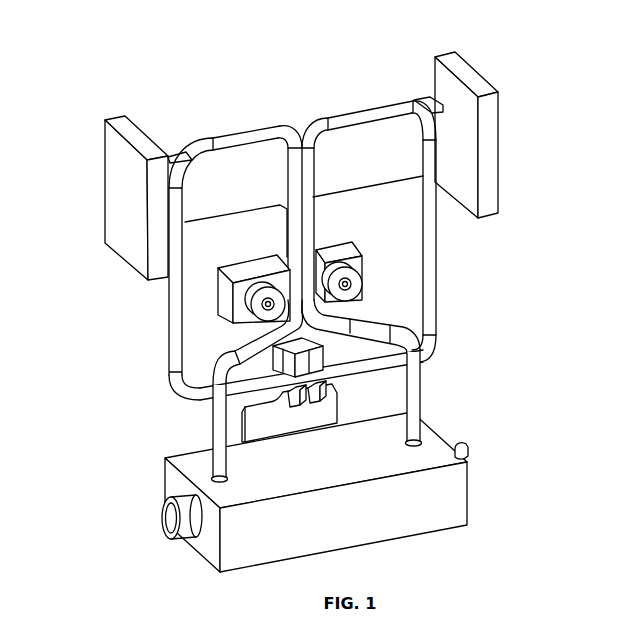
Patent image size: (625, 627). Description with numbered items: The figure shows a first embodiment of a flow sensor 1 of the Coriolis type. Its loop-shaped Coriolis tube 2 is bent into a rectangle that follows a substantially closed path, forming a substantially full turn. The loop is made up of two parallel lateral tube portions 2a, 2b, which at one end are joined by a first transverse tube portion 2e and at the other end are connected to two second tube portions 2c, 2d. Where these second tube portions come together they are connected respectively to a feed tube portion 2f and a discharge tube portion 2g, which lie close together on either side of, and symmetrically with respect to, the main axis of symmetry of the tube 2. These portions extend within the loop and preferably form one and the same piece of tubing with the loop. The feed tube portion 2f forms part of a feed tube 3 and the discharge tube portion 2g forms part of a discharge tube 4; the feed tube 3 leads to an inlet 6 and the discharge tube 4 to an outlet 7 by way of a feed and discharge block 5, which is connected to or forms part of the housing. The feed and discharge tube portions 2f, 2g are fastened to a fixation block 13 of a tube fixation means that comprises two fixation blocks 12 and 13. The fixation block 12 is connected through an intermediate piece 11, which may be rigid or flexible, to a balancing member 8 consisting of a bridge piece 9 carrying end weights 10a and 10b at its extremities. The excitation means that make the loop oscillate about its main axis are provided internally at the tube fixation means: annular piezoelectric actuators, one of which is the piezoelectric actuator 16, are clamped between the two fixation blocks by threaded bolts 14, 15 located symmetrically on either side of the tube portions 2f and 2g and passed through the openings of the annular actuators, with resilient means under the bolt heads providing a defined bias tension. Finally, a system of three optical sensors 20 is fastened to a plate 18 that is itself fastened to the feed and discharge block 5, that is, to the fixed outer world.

The flow sensor 1 is at (335, 90).
The loop-shaped Coriolis tube 2 is at (328, 209).
The lateral tube portion 2a is at (177, 337).
The lateral tube portion 2b is at (430, 250).
The second tube portion 2c is at (238, 137).
The second tube portion 2d is at (358, 115).
The first transverse tube portion 2e is at (350, 365).
The feed tube portion 2f is at (293, 183).
The discharge tube portion 2g is at (309, 244).
The feed tube 3 is at (217, 418).
The discharge tube 4 is at (413, 385).
The feed and discharge block 5 is at (428, 518).
The inlet 6 is at (192, 518).
The outlet 7 is at (456, 448).
The balancing member 8 is at (296, 149).
The bridge piece 9 is at (395, 130).
The end weight 10a is at (490, 157).
The end weight 10b is at (117, 165).
The intermediate piece 11 is at (283, 250).
The fixation block 12 is at (222, 288).
The fixation block 13 is at (320, 303).
The bolt 14 is at (258, 315).
The bolt 15 is at (344, 302).
The piezoelectric actuator 16 is at (235, 302).
The plate 18 is at (283, 425).
The optical sensors 20 is at (293, 416).